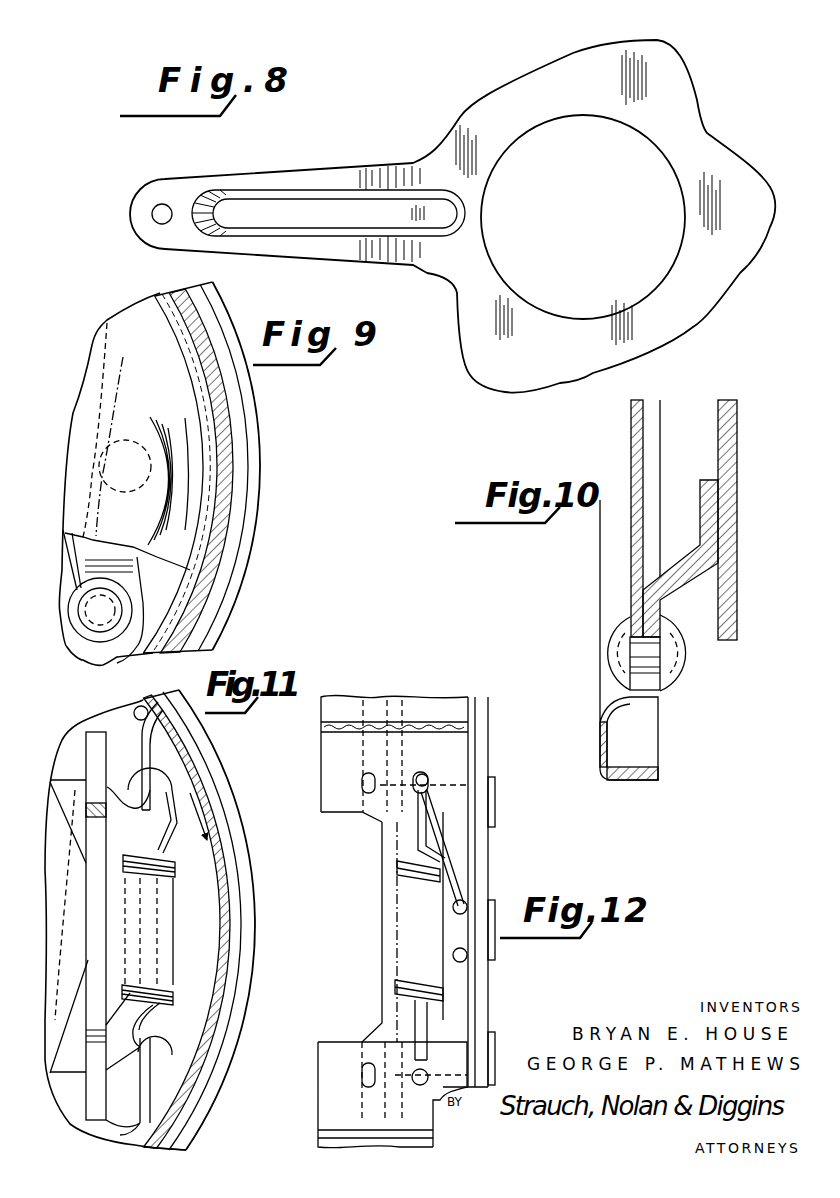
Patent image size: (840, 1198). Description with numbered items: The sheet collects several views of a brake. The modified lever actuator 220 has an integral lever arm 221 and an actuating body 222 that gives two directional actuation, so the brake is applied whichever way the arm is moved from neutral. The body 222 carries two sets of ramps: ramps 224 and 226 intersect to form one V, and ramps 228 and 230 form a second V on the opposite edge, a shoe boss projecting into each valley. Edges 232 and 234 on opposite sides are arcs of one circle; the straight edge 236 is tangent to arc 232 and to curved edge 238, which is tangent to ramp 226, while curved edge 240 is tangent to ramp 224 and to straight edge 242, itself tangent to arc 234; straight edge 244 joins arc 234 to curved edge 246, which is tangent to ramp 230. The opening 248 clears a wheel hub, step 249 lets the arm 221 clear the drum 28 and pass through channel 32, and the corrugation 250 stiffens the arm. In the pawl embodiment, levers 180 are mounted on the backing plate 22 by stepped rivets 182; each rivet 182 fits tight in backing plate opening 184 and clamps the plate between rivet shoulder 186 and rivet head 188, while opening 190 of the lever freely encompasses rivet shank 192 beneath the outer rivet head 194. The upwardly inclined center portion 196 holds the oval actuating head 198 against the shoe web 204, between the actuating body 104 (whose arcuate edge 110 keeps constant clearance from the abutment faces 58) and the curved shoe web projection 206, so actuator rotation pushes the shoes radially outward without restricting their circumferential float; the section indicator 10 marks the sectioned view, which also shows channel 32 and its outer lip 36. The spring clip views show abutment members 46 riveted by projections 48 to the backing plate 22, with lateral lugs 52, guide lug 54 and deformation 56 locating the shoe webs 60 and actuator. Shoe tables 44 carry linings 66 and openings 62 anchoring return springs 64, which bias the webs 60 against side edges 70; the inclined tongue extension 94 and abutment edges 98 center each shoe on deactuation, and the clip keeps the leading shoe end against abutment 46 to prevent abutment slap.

In FIG. 9, the section line / viewing direction 10 is at (160, 373).
In FIG. 11, the section line / viewing direction 10 is at (116, 692).
In FIG. 9, the backing plate 22 is at (170, 584).
In FIG. 10, the backing plate 22 is at (628, 534).
In FIG. 11, the backing plate 22 is at (222, 752).
In FIG. 12, the backing plate 22 is at (491, 740).
In FIG. 9, the brake drum 28 is at (233, 557).
In FIG. 11, the brake drum 28 is at (222, 830).
In FIG. 9, the annular channel 32 is at (242, 420).
In FIG. 10, the annular channel 32 is at (645, 743).
In FIG. 11, the annular channel 32 is at (215, 785).
In FIG. 9, the outer lip 36 is at (258, 478).
In FIG. 10, the outer lip 36 is at (660, 771).
In FIG. 11, the outer lip 36 is at (236, 805).
In FIG. 9, the shoe table 44 is at (175, 598).
In FIG. 11, the shoe table 44 is at (142, 752).
In FIG. 12, the shoe table 44 is at (322, 755).
In FIG. 11, the shoe abutment member 46 is at (100, 865).
In FIG. 12, the shoe abutment member 46 is at (382, 942).
In FIG. 12, the riveting projections 48 is at (496, 793).
In FIG. 11, the integral lugs 52 is at (86, 753).
In FIG. 12, the integral lugs 52 is at (363, 762).
In FIG. 11, the guide lug 54 is at (75, 928).
In FIG. 11, the intermediate deformation 56 is at (170, 968).
In FIG. 12, the intermediate deformation 56 is at (470, 875).
In FIG. 11, the plane surface 58 is at (80, 845).
In FIG. 12, the brake shoe web 60 is at (400, 712).
In FIG. 11, the spring fastening openings 62 is at (150, 783).
In FIG. 12, the spring fastening openings 62 is at (427, 775).
In FIG. 11, the return springs 64 is at (173, 997).
In FIG. 12, the return springs 64 is at (397, 890).
In FIG. 9, the brake lining 66 is at (213, 520).
In FIG. 11, the brake lining 66 is at (146, 740).
In FIG. 12, the brake lining 66 is at (367, 726).
In FIG. 12, the side edges 70 is at (410, 772).
In FIG. 12, the inclined tongue extension 94 is at (383, 808).
In FIG. 11, the shoe web abutment edges 98 is at (62, 795).
In FIG. 9, the actuating ramped body 104 is at (108, 362).
In FIG. 11, the actuating ramped body 104 is at (60, 845).
In FIG. 11, the edge 110 is at (70, 983).
In FIG. 9, the lever 180 is at (115, 657).
In FIG. 10, the lever 180 is at (675, 545).
In FIG. 9, the stepped rivet 182 is at (90, 610).
In FIG. 10, the stepped rivet 182 is at (615, 648).
In FIG. 10, the backing plate opening 184 is at (615, 683).
In FIG. 10, the rivet shoulder 186 is at (630, 628).
In FIG. 10, the rivet head 188 is at (610, 663).
In FIG. 9, the opening 190 is at (70, 595).
In FIG. 10, the opening 190 is at (668, 616).
In FIG. 10, the rivet shank 192 is at (670, 690).
In FIG. 9, the rivet head 194 is at (85, 625).
In FIG. 10, the rivet head 194 is at (680, 660).
In FIG. 9, the upwardly inclined center portion 196 is at (70, 550).
In FIG. 10, the upwardly inclined center portion 196 is at (668, 586).
In FIG. 9, the oval actuating head 198 is at (105, 440).
In FIG. 10, the oval actuating head 198 is at (702, 500).
In FIG. 9, the shoe web 204 is at (90, 398).
In FIG. 10, the shoe web 204 is at (720, 425).
In FIG. 9, the curved shoe web projection 206 is at (150, 402).
In FIG. 10, the curved shoe web projection 206 is at (710, 460).
In FIG. 8, the modified lever actuator 220 is at (428, 279).
In FIG. 8, the lever arm 221 is at (233, 178).
In FIG. 8, the actuating body 222 is at (535, 109).
In FIG. 8, the ramp 224 is at (730, 147).
In FIG. 8, the ramp 226 is at (700, 97).
In FIG. 8, the ramp 228 is at (440, 285).
In FIG. 8, the ramp 230 is at (460, 330).
In FIG. 8, the edge 232 is at (500, 87).
In FIG. 8, the edge 234 is at (673, 340).
In FIG. 8, the straight edge 236 is at (590, 57).
In FIG. 8, the curved edge 238 is at (670, 47).
In FIG. 8, the curved edge 240 is at (767, 184).
In FIG. 8, the straight edge 242 is at (741, 267).
In FIG. 8, the straight edge 244 is at (578, 380).
In FIG. 8, the curved edge 246 is at (493, 390).
In FIG. 8, the opening 248 is at (484, 190).
In FIG. 8, the step 249 is at (392, 172).
In FIG. 8, the longitudinal corrugation 250 is at (292, 218).